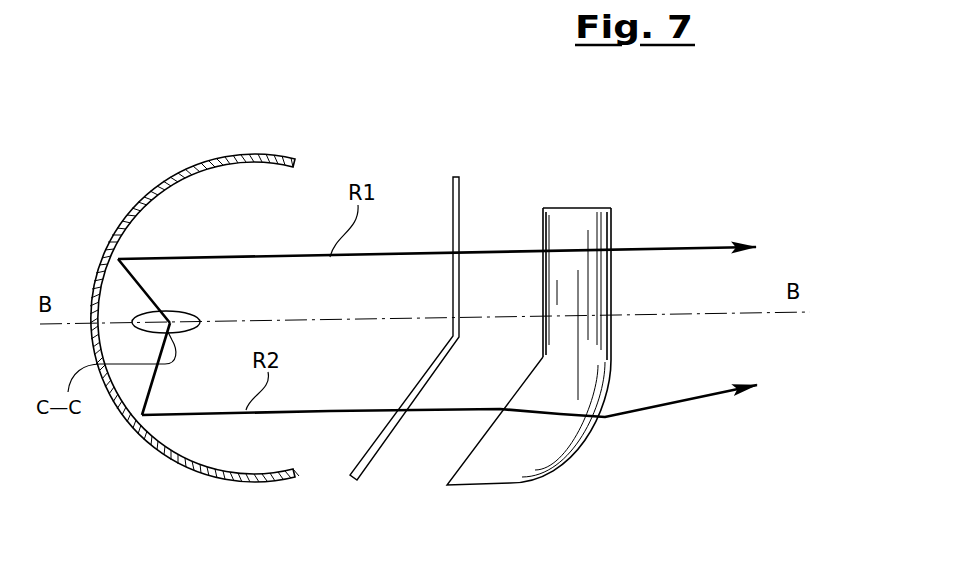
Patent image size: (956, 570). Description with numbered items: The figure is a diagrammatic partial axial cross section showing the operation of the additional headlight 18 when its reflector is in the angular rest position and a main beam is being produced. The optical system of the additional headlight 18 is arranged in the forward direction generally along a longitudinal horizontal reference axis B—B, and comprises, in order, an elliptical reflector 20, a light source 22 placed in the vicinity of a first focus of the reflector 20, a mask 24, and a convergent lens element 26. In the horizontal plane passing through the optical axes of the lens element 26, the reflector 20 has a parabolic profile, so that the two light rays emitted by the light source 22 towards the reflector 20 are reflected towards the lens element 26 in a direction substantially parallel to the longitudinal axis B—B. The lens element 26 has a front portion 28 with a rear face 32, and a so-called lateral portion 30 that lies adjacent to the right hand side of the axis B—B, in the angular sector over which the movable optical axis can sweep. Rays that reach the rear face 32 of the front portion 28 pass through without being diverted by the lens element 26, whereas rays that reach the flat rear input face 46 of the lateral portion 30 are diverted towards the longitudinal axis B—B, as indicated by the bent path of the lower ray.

The additional headlight 18 is at (138, 168).
The reflector 20 is at (265, 156).
The light source 22 is at (200, 306).
The mask 24 is at (459, 170).
The convergent lens element 26 is at (573, 174).
The front portion 28 is at (614, 232).
The lateral portion 30 is at (546, 477).
The rear face 32 is at (543, 232).
The rear input face 46 is at (452, 480).